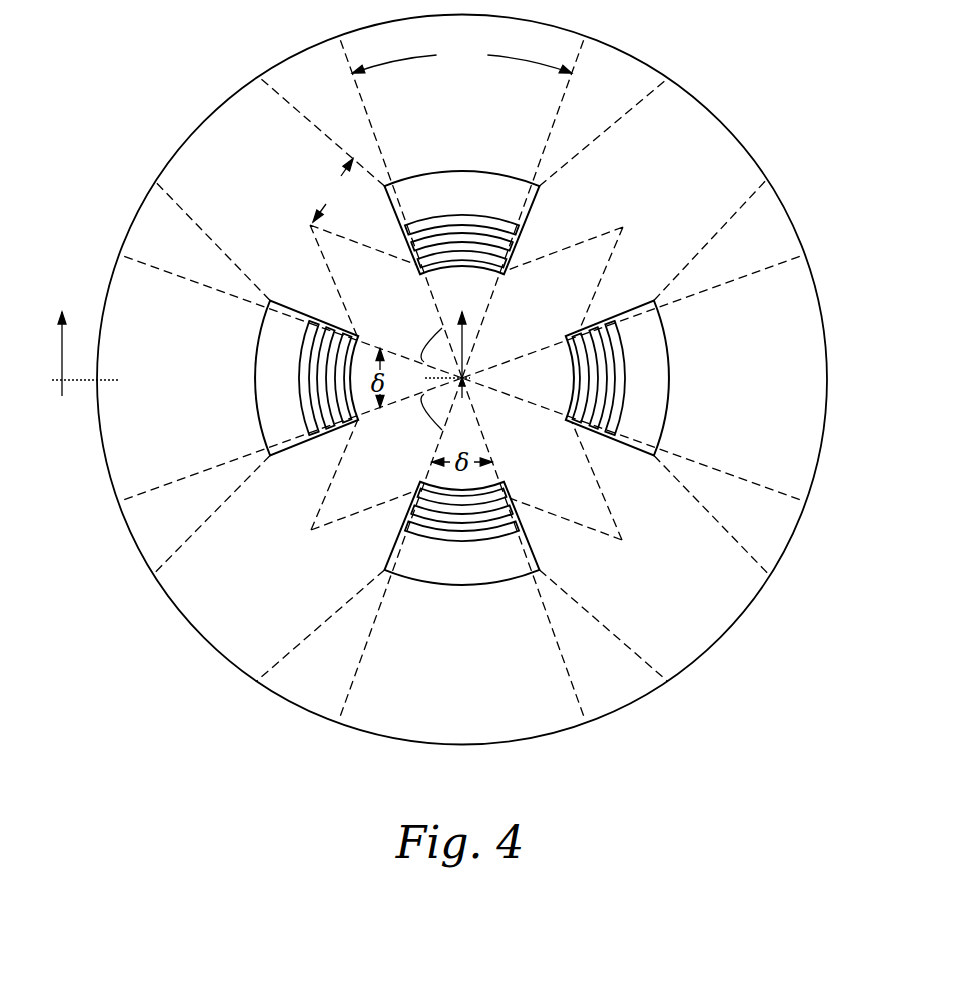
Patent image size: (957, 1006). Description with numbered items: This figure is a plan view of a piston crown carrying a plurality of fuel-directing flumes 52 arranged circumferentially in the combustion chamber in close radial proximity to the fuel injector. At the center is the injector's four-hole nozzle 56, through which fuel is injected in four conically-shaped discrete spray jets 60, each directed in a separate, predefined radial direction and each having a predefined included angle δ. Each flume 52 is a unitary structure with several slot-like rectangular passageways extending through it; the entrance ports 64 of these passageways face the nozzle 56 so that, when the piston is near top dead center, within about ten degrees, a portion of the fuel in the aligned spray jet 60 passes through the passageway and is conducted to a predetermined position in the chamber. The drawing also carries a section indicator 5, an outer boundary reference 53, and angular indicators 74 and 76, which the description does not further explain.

The section line 5- 5 is at (260, 338).
The flume 52 is at (674, 389).
The stator ring / housing 53 is at (786, 544).
The four-hole nozzle 56 is at (466, 374).
The fuel spray jet 60 is at (442, 430).
The entrance port 64 is at (505, 263).
The pole arc angle 74 is at (462, 59).
The angle between pole edges 76 is at (333, 190).